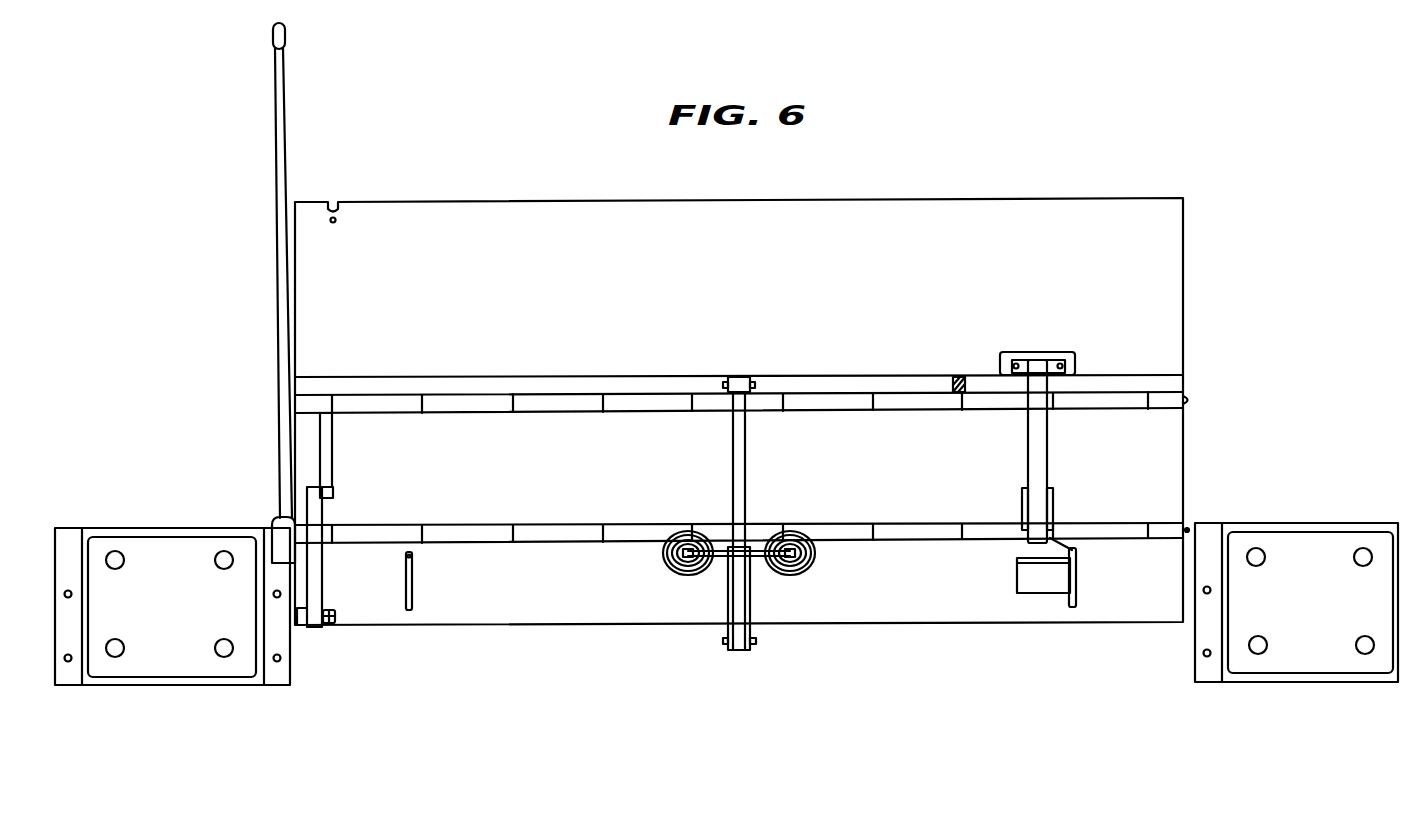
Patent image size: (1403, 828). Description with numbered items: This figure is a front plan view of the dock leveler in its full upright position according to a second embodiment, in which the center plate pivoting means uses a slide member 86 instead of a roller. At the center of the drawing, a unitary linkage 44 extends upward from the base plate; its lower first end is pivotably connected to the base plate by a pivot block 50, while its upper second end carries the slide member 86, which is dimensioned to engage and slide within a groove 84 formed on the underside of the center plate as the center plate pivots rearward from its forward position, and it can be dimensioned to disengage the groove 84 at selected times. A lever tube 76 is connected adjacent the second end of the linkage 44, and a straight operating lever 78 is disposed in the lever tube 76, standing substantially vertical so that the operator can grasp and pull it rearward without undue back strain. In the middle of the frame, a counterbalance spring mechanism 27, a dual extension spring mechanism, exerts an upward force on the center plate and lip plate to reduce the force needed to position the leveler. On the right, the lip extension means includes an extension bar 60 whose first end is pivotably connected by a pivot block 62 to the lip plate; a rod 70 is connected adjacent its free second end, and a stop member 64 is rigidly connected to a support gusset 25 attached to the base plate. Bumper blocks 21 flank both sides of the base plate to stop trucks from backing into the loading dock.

The bumper block 21 is at (203, 685).
The support gusset 25 is at (414, 581).
The counterbalance spring mechanism 27 is at (800, 573).
The linkage 44 is at (316, 566).
The pivot block 50 is at (333, 625).
The extension bar 60 is at (1048, 456).
The pivot block 62 is at (1062, 360).
The stop member 64 is at (1037, 560).
The rod 70 is at (1074, 549).
The lever tube 76 is at (280, 543).
The operating lever 78 is at (278, 342).
The groove 84 is at (333, 493).
The slide member 86 is at (332, 448).